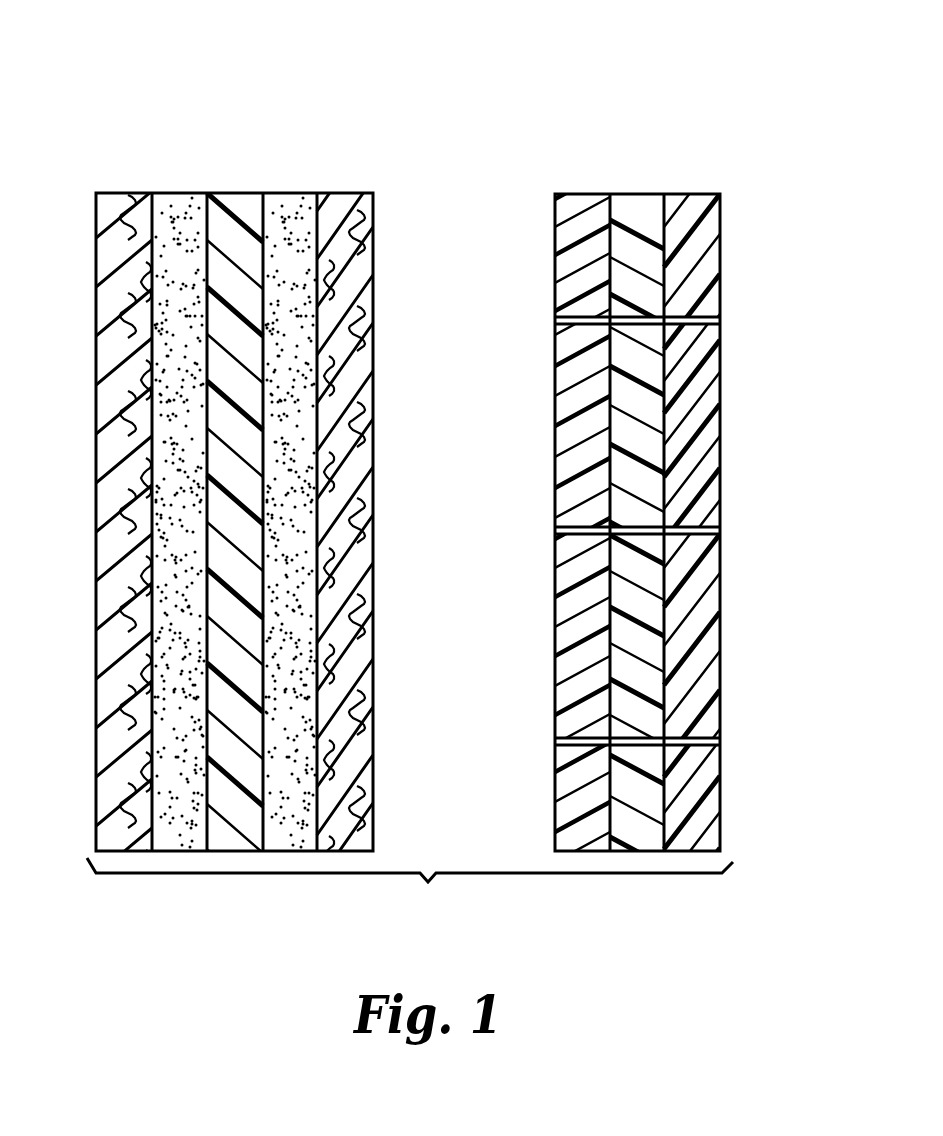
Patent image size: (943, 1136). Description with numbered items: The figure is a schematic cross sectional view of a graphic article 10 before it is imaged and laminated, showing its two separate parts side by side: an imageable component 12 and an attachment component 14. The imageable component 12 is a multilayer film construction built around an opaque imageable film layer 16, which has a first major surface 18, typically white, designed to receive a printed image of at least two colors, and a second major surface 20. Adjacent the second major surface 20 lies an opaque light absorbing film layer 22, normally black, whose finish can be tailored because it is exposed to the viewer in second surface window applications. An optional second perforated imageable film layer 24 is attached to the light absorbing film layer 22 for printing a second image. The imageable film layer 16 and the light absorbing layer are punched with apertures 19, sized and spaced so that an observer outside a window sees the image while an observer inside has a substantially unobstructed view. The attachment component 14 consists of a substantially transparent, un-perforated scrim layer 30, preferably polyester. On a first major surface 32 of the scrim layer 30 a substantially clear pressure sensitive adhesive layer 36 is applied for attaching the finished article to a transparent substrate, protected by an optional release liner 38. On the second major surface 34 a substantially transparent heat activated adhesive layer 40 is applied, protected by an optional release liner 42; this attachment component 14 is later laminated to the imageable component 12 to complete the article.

The graphic article 10 is at (410, 888).
The imageable component 12 is at (550, 83).
The attachment component 14 is at (137, 81).
The imageable film layer 16 is at (561, 187).
The first major surface 18 is at (555, 290).
The apertures 19 is at (702, 328).
The second major surface 20 is at (620, 196).
The light absorbing film layer 22 is at (642, 196).
The second perforated imageable film layer 24 is at (705, 233).
The scrim layer 30 is at (234, 182).
The first major surface 32 is at (198, 195).
The second major surface 34 is at (273, 195).
The pressure sensitive adhesive layer 36 is at (167, 196).
The release liner 38 is at (103, 271).
The heat activated adhesive layer 40 is at (303, 196).
The release liner 42 is at (360, 226).